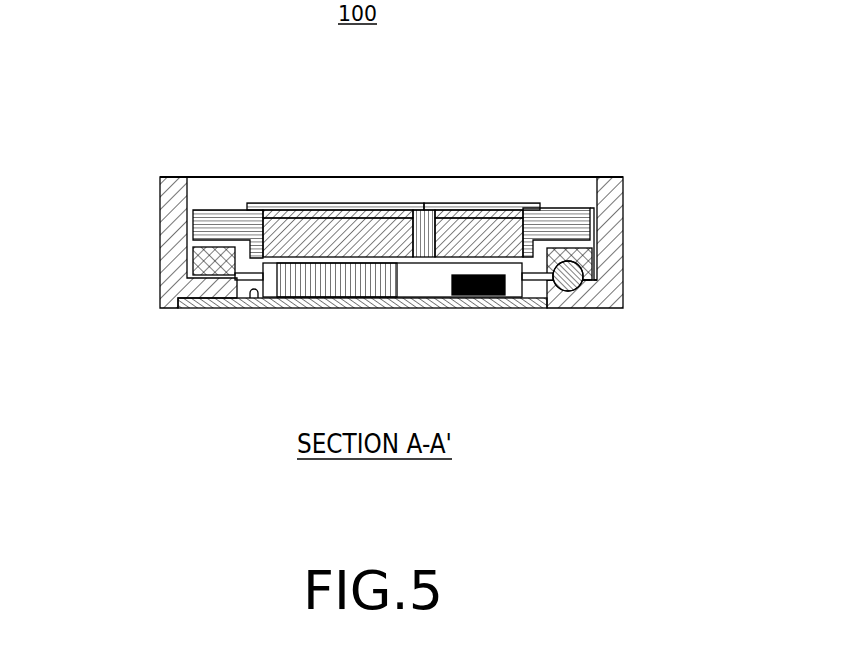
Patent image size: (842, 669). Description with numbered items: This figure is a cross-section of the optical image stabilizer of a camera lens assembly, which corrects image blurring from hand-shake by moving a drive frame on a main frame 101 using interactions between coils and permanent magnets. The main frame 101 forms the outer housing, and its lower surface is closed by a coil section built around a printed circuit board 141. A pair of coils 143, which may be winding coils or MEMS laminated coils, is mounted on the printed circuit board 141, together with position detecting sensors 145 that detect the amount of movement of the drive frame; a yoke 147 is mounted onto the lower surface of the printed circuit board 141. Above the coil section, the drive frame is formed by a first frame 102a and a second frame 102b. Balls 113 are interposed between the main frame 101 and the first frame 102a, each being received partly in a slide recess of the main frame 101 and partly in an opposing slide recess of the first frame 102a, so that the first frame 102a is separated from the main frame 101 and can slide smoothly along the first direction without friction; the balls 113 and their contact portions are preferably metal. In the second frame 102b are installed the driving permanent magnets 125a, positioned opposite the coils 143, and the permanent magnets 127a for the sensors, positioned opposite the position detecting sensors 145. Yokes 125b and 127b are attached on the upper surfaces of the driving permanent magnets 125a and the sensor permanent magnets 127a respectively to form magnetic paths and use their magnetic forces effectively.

The main frame 101 is at (171, 192).
The first frame 102a is at (193, 258).
The second frame 102b is at (589, 218).
The ball 113 is at (588, 267).
The driving permanent magnet 125a is at (372, 232).
The yoke 125b is at (307, 208).
The permanent magnet for sensor 127a is at (458, 238).
The yoke 127b is at (507, 205).
The printed circuit board 141 is at (255, 301).
The coil 143 is at (322, 291).
The position detecting sensor 145 is at (478, 296).
The yoke 147 is at (524, 307).